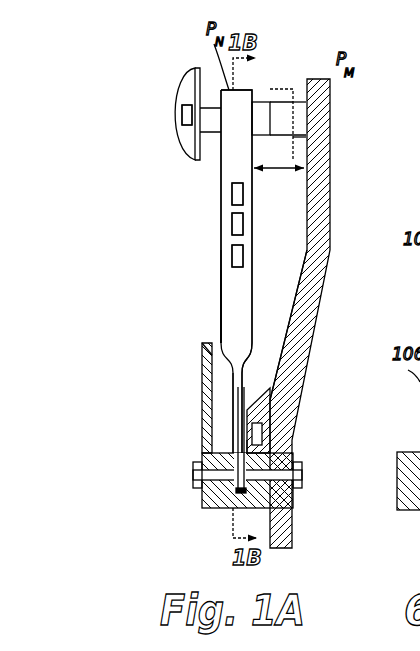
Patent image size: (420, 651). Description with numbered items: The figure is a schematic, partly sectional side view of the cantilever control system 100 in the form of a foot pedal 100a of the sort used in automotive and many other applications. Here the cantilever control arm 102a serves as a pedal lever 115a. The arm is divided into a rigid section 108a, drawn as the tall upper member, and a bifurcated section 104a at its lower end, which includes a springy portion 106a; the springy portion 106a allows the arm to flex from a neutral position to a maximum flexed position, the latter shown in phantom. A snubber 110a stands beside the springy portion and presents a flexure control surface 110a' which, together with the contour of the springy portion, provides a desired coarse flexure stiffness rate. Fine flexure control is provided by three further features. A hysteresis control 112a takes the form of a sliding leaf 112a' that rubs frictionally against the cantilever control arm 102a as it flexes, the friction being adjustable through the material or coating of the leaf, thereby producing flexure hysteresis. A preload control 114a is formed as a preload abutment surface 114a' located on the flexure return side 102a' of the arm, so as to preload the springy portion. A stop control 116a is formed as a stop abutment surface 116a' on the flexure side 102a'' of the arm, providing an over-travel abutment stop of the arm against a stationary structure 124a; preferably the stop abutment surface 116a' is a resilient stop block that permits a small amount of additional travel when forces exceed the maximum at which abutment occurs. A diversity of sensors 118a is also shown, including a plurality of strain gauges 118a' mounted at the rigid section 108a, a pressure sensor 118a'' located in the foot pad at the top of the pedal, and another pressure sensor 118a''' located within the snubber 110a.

The cantilever control system 100 is at (220, 280).
The foot pedal 100a is at (183, 306).
The cantilever control arm 102a is at (182, 271).
The pedal lever 115a is at (203, 216).
The rigid section 108a is at (220, 256).
The flexure return side 102a' is at (216, 178).
The flexure side 102a'' is at (322, 144).
The bifurcated section 104a is at (222, 435).
The springy portion 106a is at (222, 402).
The snubber 110a is at (302, 359).
The flexure control surface 110a' is at (303, 413).
The hysteresis control 112a is at (304, 409).
The sliding leaf 112a' is at (297, 450).
The preload control 114a is at (161, 398).
The preload abutment surface 114a' is at (309, 325).
The stop control 116a is at (284, 99).
The stop abutment surface 116a' is at (329, 109).
The sensors 118a is at (182, 277).
The strain gauges 118a' is at (326, 225).
The pressure sensor 118a'' is at (171, 72).
The pressure sensor 118a''' is at (312, 428).
The stationary structure 124a is at (293, 505).